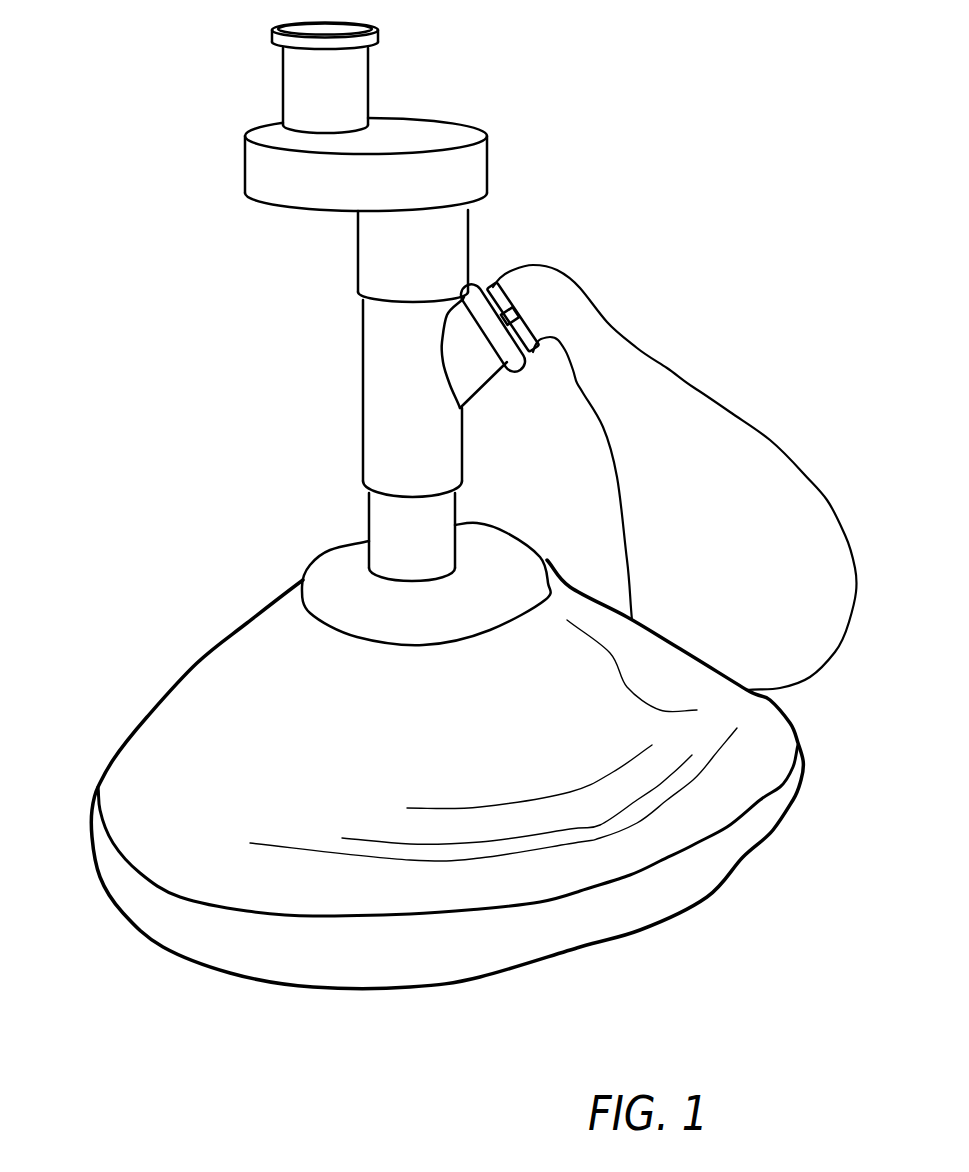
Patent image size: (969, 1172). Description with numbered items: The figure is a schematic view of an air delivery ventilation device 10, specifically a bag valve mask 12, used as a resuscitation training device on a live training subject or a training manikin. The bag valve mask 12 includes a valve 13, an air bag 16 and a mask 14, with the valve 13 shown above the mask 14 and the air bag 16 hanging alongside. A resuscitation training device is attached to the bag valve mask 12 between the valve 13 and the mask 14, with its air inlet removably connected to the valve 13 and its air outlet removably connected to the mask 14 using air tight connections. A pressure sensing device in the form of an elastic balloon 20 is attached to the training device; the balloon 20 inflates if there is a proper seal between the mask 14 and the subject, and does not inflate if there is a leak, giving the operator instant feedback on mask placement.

The air delivery ventilation device 10 is at (242, 375).
The bag valve mask 12 is at (418, 128).
The valve 13 is at (447, 240).
The mask 14 is at (223, 697).
The air bag 16 is at (692, 470).
The balloon 20 is at (750, 493).